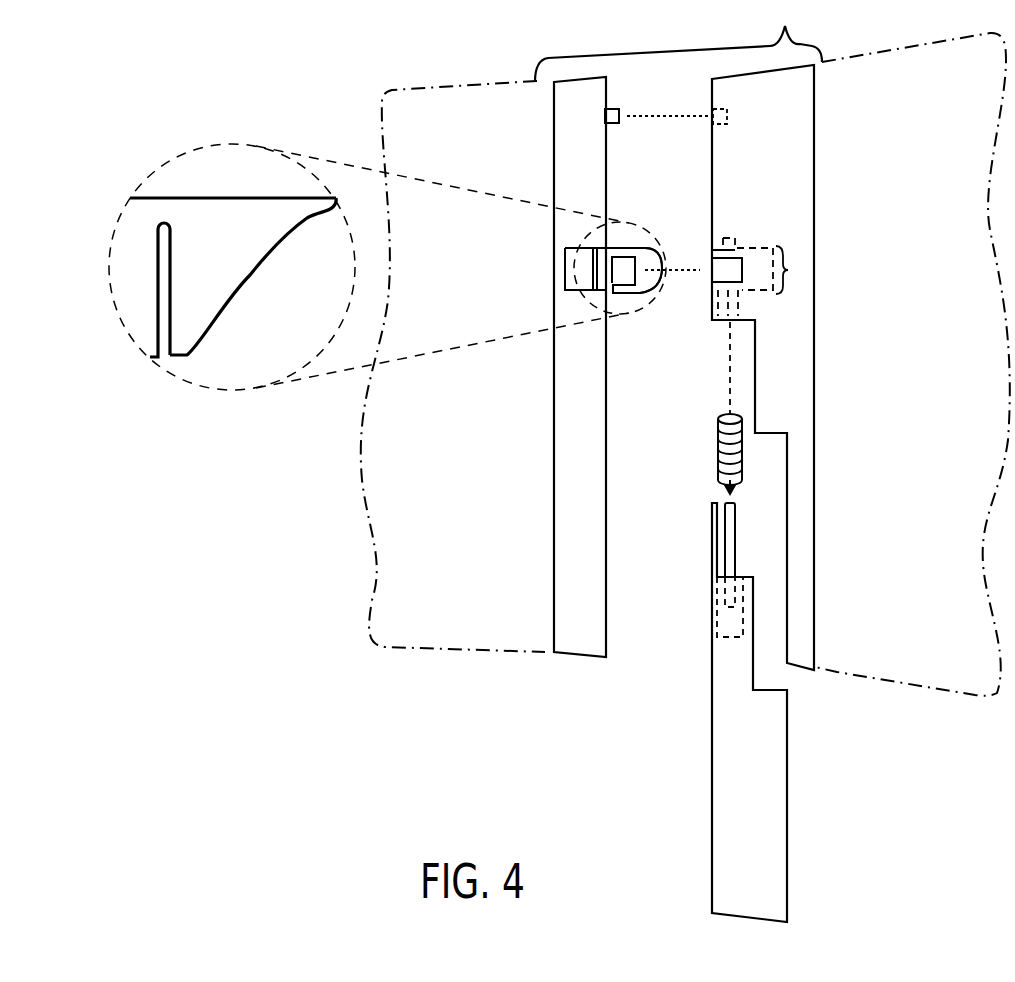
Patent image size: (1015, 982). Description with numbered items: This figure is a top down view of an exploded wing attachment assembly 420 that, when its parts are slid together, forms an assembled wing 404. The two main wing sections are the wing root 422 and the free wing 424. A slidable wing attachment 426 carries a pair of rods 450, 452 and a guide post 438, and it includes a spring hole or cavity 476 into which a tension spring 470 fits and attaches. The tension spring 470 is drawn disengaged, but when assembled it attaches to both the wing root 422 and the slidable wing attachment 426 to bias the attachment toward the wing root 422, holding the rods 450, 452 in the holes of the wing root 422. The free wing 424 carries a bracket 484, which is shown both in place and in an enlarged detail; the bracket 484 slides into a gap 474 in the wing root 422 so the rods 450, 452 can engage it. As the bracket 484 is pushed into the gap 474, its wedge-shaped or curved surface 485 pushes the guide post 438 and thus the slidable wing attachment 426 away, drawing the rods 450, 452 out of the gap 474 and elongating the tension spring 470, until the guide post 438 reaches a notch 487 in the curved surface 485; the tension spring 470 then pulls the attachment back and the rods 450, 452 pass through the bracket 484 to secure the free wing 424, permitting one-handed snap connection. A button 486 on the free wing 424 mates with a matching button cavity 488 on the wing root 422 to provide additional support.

The assembled wing 404 is at (293, 764).
The wing attachment assembly 420 is at (678, 41).
The wing root 422 is at (763, 367).
The free wing 424 is at (580, 367).
The slidable wing attachment 426 is at (749, 712).
The guide post 438 is at (717, 542).
The rod 450 is at (735, 548).
The rod 452 is at (817, 546).
The tension spring 470 is at (718, 456).
The gap 474 is at (778, 277).
The spring hole or cavity 476 is at (717, 642).
The bracket 484 is at (564, 250).
The curved surface 485 is at (655, 260).
The button 486 is at (605, 115).
The notch 487 is at (172, 237).
The button cavity 488 is at (727, 122).